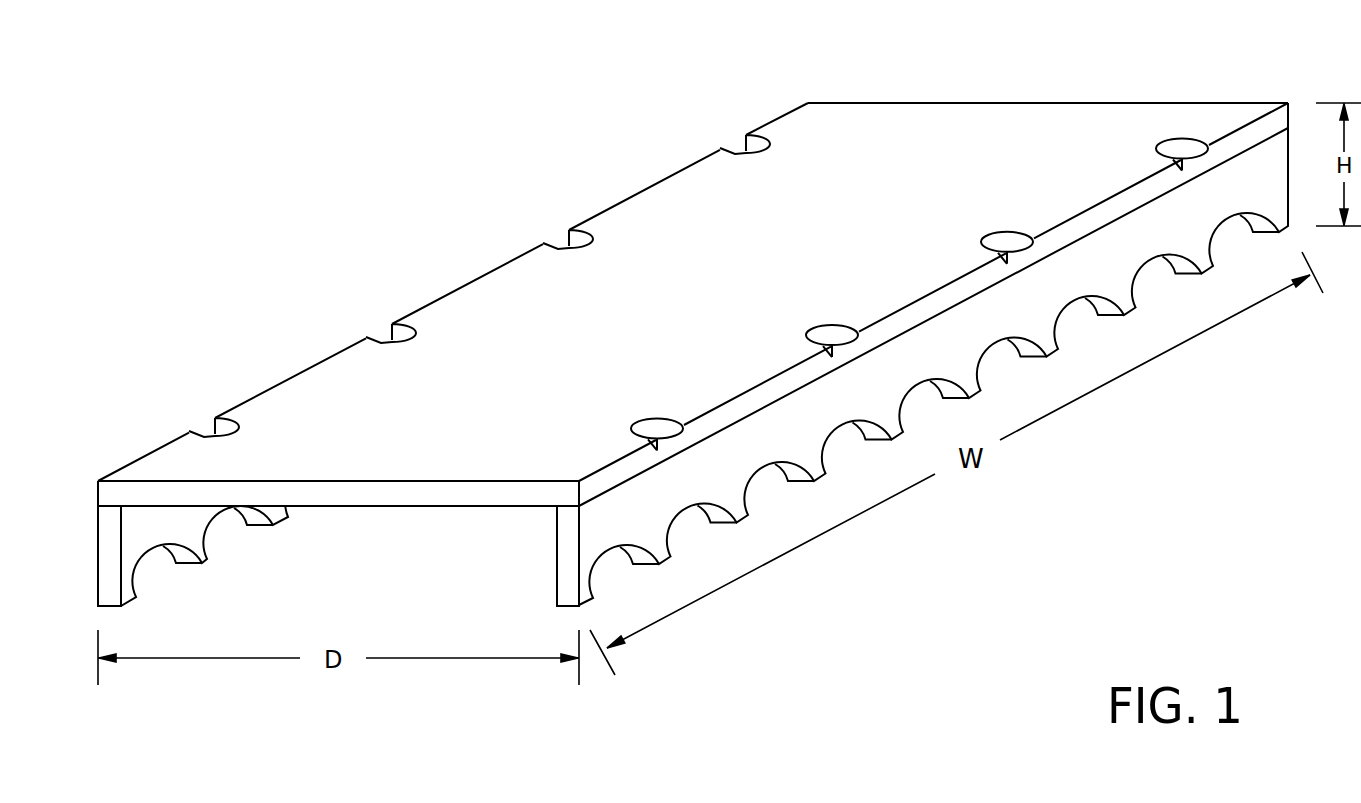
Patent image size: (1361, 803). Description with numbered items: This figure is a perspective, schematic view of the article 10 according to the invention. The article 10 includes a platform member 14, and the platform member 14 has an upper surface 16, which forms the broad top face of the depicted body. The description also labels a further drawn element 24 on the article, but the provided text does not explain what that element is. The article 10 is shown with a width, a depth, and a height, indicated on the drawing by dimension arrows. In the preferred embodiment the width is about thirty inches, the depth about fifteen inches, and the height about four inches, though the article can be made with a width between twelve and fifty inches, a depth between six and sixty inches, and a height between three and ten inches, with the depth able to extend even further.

The article 10 is at (693, 311).
The platform member 14 is at (977, 152).
The upper surface 16 is at (558, 364).
The panel body with ridges 24 is at (685, 230).